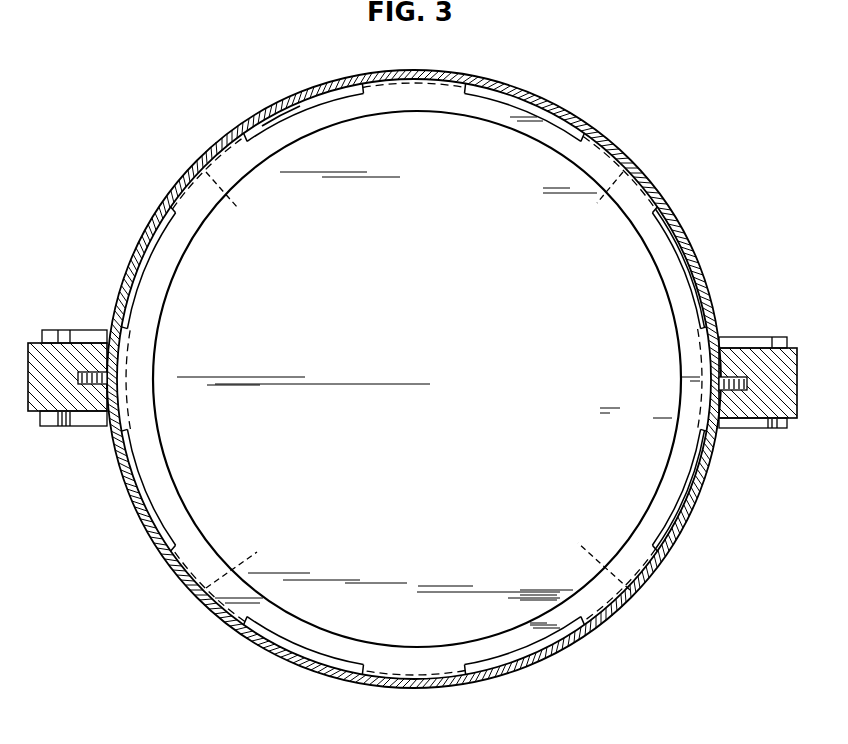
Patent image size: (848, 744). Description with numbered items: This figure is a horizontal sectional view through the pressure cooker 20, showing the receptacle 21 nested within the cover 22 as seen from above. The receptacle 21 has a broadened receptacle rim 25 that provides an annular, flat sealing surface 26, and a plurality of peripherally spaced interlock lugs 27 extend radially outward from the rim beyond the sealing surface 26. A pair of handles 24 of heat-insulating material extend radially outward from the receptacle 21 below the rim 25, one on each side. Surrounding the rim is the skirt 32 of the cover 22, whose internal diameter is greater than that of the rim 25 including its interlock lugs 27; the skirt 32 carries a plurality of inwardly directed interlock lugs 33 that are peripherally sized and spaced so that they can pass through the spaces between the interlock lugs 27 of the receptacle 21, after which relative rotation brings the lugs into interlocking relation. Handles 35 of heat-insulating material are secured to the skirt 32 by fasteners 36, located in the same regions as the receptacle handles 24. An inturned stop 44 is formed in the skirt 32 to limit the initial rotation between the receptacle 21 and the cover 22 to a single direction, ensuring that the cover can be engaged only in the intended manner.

The pressure cooker 20 is at (617, 103).
The receptacle 21 is at (517, 107).
The cover 22 is at (555, 103).
The handles 24 is at (757, 345).
The receptacle rim 25 is at (672, 250).
The sealing surface 26 is at (573, 150).
The interlock lugs 27 is at (207, 153).
The skirt 32 is at (281, 98).
The interlock lugs 33 is at (418, 381).
The handles 35 is at (797, 420).
The fasteners 36 is at (713, 388).
The inturned stop 44 is at (473, 667).